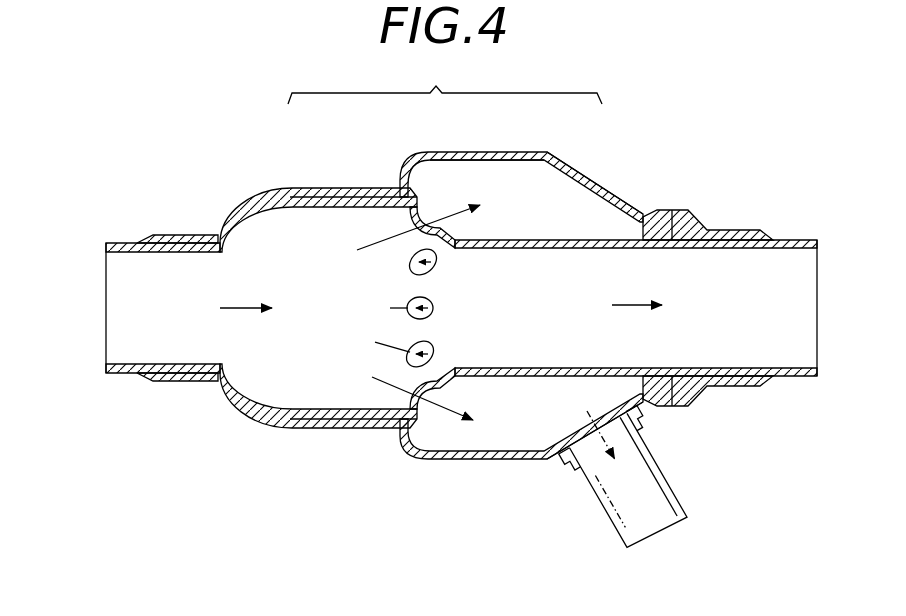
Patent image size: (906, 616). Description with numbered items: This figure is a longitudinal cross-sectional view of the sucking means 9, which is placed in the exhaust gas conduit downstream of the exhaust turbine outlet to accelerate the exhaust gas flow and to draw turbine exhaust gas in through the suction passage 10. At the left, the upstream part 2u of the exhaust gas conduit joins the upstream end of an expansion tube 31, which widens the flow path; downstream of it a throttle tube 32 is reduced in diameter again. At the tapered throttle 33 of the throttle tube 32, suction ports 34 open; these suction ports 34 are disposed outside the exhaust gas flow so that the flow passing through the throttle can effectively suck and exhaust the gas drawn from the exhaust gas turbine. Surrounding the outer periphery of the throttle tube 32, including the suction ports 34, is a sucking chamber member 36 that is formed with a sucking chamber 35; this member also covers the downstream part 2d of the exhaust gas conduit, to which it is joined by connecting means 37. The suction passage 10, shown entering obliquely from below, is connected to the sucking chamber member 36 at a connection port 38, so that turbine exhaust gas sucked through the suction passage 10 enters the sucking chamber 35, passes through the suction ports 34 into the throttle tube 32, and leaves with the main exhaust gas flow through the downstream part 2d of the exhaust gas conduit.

The sucking means 9 is at (436, 87).
The upstream part of the exhaust gas conduit 2u is at (123, 290).
The downstream part of the exhaust gas conduit 2d is at (797, 238).
The expansion tube 31 is at (272, 196).
The throttle tube 32 is at (447, 233).
The tapered throttle 33 is at (420, 287).
The suction port 34 is at (415, 252).
The sucking chamber 35 is at (533, 200).
The sucking chamber member 36 is at (573, 173).
The connecting means 37 is at (677, 212).
The connection port 38 is at (572, 467).
The suction passage 10 is at (648, 517).